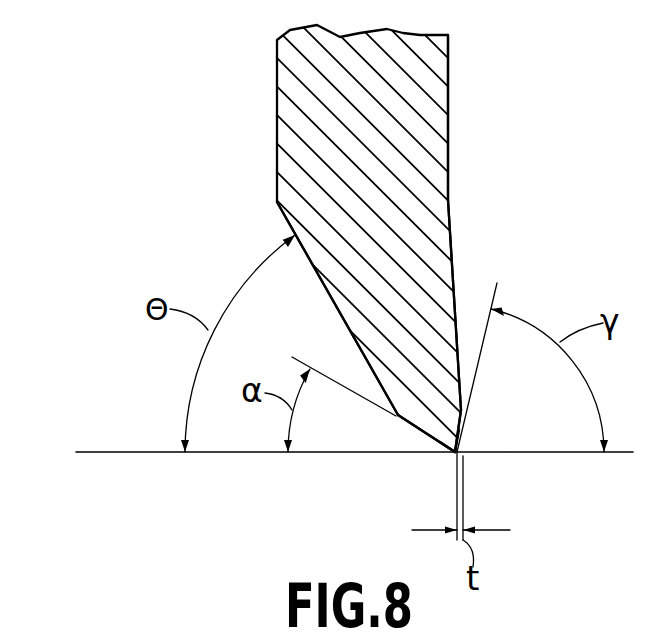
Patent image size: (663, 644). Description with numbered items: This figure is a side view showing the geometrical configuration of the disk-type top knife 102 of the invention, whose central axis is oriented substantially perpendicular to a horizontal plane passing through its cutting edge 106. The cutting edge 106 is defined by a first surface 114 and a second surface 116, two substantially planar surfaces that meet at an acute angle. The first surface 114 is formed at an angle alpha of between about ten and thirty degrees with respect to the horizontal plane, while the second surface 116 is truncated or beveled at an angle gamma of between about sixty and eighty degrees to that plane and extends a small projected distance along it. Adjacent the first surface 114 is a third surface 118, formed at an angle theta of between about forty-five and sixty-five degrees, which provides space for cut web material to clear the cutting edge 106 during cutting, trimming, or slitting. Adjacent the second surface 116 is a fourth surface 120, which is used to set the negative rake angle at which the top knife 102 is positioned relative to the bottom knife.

The top knife 102 is at (127, 142).
The cutting edge 106 is at (452, 456).
The first surface 114 is at (422, 432).
The second surface 116 is at (458, 443).
The third surface 118 is at (330, 295).
The fourth surface 120 is at (453, 248).